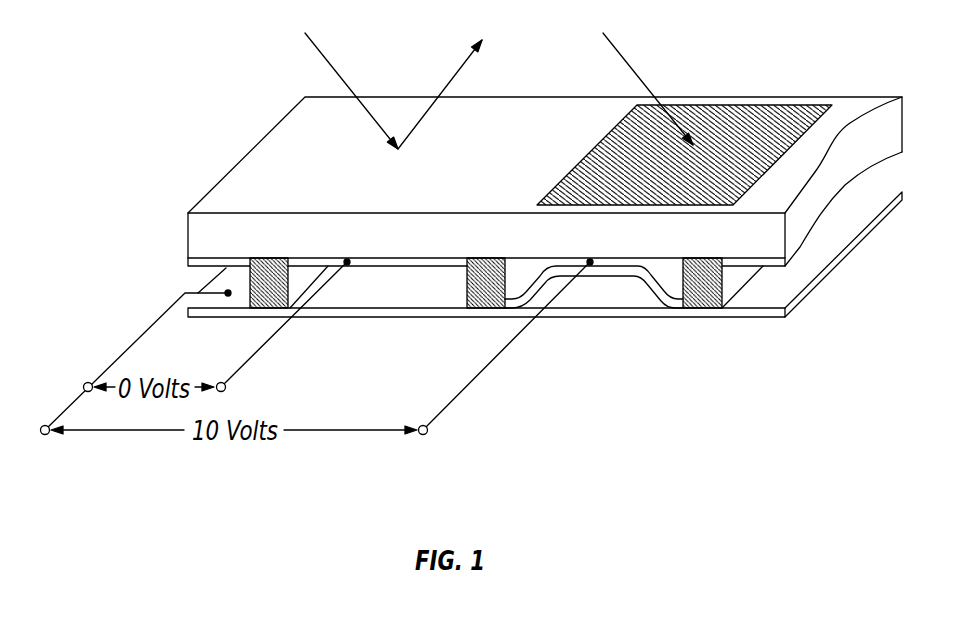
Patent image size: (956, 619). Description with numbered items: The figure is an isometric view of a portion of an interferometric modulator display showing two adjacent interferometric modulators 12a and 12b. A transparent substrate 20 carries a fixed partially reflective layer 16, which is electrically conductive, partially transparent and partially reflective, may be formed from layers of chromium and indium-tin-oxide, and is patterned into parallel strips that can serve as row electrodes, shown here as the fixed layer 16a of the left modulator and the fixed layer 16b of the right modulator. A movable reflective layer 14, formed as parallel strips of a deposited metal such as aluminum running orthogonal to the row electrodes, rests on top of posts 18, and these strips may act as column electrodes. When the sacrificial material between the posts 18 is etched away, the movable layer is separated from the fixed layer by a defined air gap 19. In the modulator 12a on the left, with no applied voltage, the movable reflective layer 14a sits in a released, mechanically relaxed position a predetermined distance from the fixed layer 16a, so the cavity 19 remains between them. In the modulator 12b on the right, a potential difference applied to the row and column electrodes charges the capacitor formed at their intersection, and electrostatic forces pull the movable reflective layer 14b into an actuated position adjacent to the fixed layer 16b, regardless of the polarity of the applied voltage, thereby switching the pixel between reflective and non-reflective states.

The interferometric modulator 12a is at (298, 167).
The interferometric modulator 12b is at (747, 128).
The movable reflective layer 14 is at (790, 305).
The movable reflective layer 14a is at (306, 312).
The movable reflective layer 14b is at (538, 298).
The fixed partially reflective layer 16 is at (188, 263).
The fixed partially reflective layer 16a is at (372, 264).
The fixed partially reflective layer 16b is at (565, 265).
The posts 18 is at (272, 297).
The air gap 19 is at (163, 267).
The transparent substrate 20 is at (833, 176).